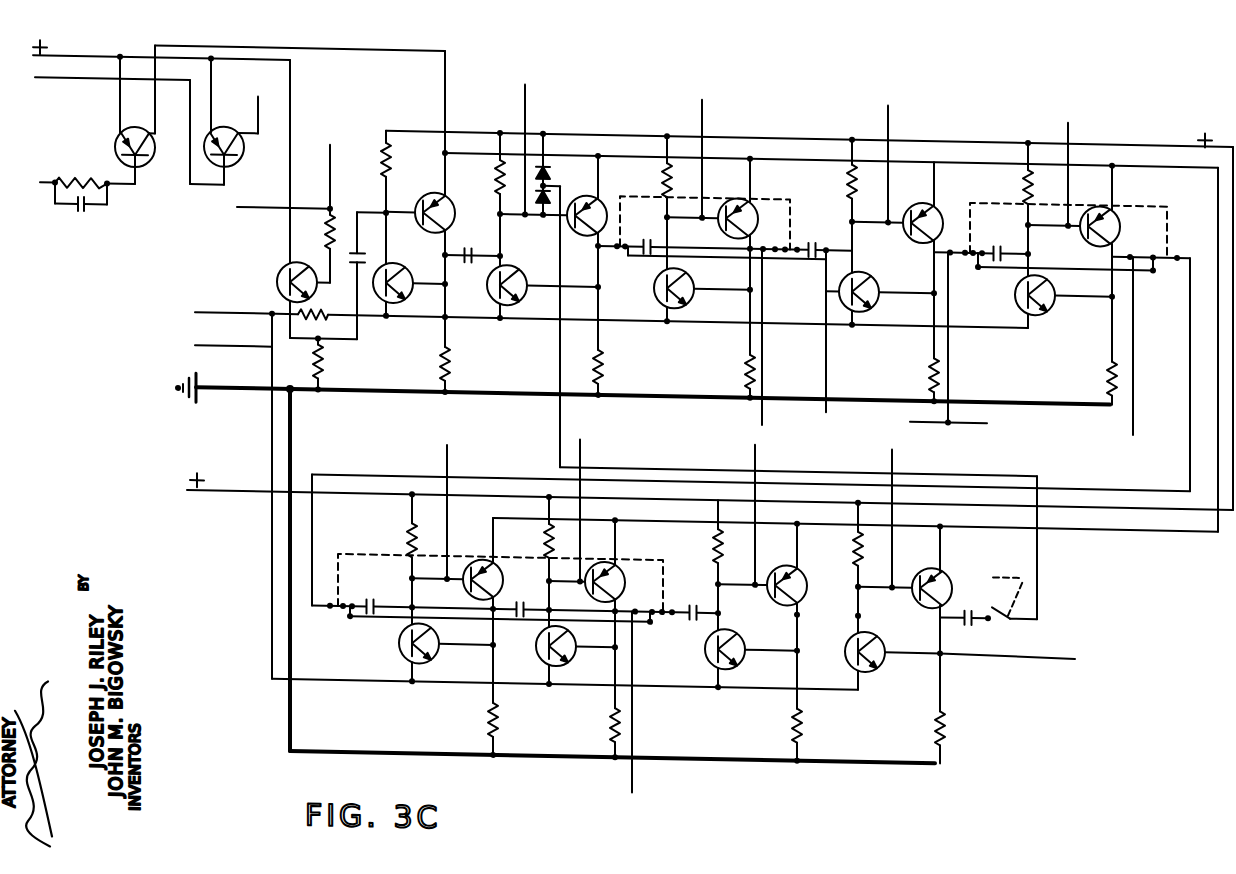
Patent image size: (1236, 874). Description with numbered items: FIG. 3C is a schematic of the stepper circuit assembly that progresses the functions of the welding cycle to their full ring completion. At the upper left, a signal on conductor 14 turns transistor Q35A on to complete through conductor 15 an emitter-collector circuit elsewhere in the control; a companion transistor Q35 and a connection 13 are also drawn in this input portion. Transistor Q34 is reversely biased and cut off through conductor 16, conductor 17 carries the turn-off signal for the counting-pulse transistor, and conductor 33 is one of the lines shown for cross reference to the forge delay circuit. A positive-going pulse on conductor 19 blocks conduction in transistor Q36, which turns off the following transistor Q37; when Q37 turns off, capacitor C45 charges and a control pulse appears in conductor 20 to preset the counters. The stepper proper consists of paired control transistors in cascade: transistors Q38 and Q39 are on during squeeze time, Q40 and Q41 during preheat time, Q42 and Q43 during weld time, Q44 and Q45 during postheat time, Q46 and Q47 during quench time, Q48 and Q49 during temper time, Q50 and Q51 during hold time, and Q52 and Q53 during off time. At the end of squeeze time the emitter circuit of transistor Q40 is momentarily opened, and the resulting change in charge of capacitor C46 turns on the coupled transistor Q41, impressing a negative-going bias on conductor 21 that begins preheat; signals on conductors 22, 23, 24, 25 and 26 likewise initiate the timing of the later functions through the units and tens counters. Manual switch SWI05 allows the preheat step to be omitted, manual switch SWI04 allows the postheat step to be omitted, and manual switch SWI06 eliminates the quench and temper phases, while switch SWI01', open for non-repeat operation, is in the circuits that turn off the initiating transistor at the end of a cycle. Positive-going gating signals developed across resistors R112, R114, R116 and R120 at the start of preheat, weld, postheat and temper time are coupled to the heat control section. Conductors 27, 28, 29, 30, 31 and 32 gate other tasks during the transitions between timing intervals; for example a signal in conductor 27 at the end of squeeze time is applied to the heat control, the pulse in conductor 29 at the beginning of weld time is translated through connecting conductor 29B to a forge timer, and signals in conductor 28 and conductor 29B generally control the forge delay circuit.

The input terminal 13 is at (40, 192).
The conductor 14 is at (57, 86).
The conductor 15 is at (258, 104).
The conductor 16 is at (262, 214).
The conductor 17 is at (207, 350).
The conductor 19 is at (206, 317).
The conductor 20 is at (529, 104).
The conductor 21 is at (706, 106).
The conductor 22 is at (891, 111).
The conductor 23 is at (446, 447).
The conductor 24 is at (584, 456).
The conductor 25 is at (759, 458).
The conductor 26 is at (896, 456).
The conductor 27 is at (760, 418).
The conductor 28 is at (825, 410).
The conductor 29 is at (987, 416).
The connecting conductor 29B is at (910, 416).
The conductor 30 is at (1130, 423).
The conductor 31 is at (634, 790).
The conductor 32 is at (1075, 648).
The conductor 33 is at (333, 162).
The transistor Q34 is at (279, 280).
The transistor Q35 is at (122, 136).
The transistor Q35A is at (244, 165).
The transistor Q36 is at (394, 304).
The transistor Q37 is at (436, 190).
The control transistor Q38 is at (511, 303).
The control transistor Q39 is at (576, 226).
The control transistor Q40 is at (684, 303).
The control transistor Q41 is at (733, 237).
The control transistor Q42 is at (866, 304).
The control transistor Q43 is at (921, 233).
The control transistor Q44 is at (1044, 303).
The control transistor Q45 is at (1098, 234).
The control transistor Q46 is at (426, 653).
The control transistor Q47 is at (478, 597).
The control transistor Q48 is at (564, 654).
The control transistor Q49 is at (608, 597).
The control transistor Q50 is at (736, 654).
The control transistor Q51 is at (780, 597).
The control transistor Q52 is at (874, 654).
The control transistor Q53 is at (925, 597).
The capacitor C45 is at (484, 247).
The capacitor C46 is at (641, 240).
The resistor R112 is at (745, 371).
The resistor R114 is at (930, 373).
The resistor R116 is at (1108, 372).
The resistor R120 is at (613, 720).
The manual switch SWI04 is at (1070, 338).
The manual switch SWI05 is at (725, 218).
The manual switch SWI06 is at (516, 580).
The switch SWI01' is at (988, 588).